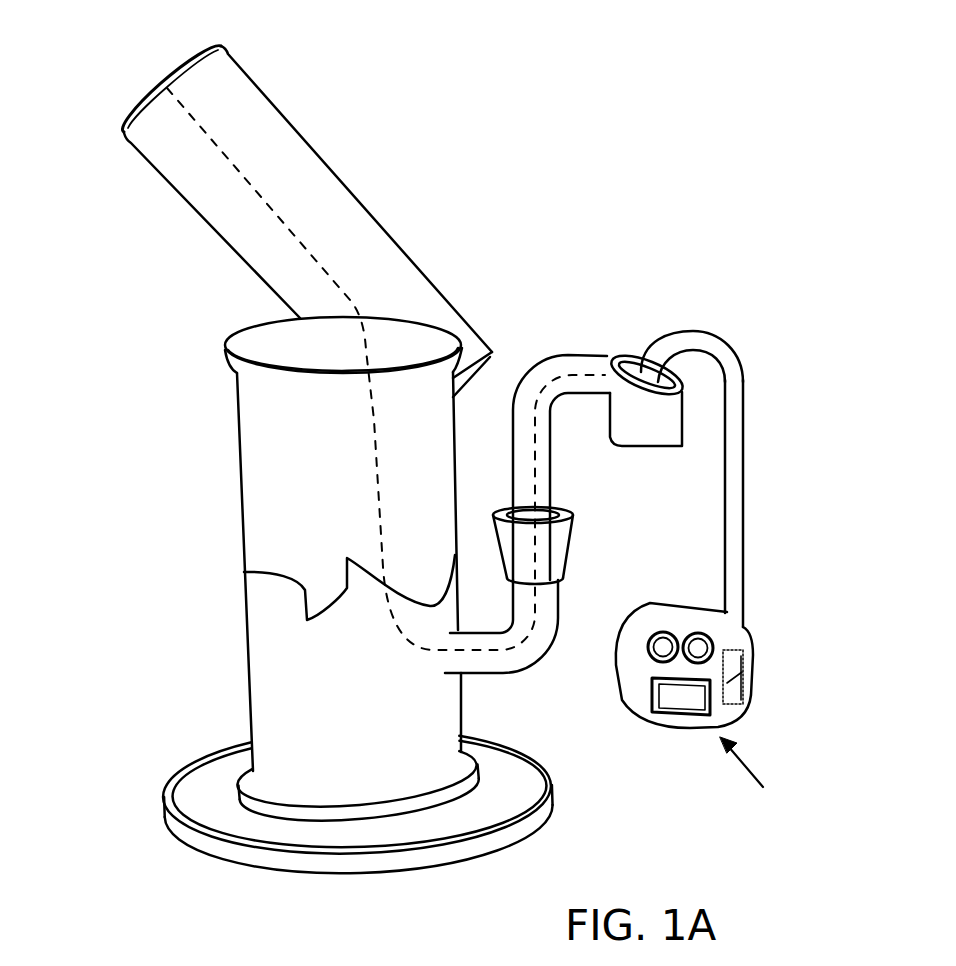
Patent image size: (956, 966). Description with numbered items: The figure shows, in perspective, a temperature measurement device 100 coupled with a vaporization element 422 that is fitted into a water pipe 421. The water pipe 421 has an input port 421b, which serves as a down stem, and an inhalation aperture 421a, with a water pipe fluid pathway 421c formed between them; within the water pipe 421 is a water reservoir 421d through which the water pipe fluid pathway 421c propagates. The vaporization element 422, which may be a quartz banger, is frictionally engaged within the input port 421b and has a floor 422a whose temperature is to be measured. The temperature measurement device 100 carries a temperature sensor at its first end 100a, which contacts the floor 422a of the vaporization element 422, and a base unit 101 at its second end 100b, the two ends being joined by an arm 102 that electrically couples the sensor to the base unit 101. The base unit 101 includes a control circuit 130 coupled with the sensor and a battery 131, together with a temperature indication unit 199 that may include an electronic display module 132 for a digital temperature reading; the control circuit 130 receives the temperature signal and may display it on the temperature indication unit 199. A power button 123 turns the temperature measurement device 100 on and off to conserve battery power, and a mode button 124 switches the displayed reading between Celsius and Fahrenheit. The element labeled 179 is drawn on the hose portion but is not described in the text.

The temperature measurement device 100 is at (722, 501).
The first end 100a is at (653, 353).
The second end 100b is at (722, 672).
The base unit 101 is at (645, 698).
The arm 102 is at (745, 573).
The power button 123 is at (660, 633).
The mode button 124 is at (690, 633).
The control circuit 130 is at (745, 658).
The battery 131 is at (745, 682).
The electronic display module 132 is at (700, 702).
The hose loop 179 is at (703, 350).
The temperature indication unit 199 is at (764, 776).
The water pipe 421 is at (290, 522).
The inhalation aperture 421a is at (157, 80).
The input port 421b is at (572, 512).
The water pipe fluid pathway 421c is at (401, 645).
The water reservoir 421d is at (278, 665).
The vaporization element 422 is at (646, 438).
The floor 422a is at (657, 446).